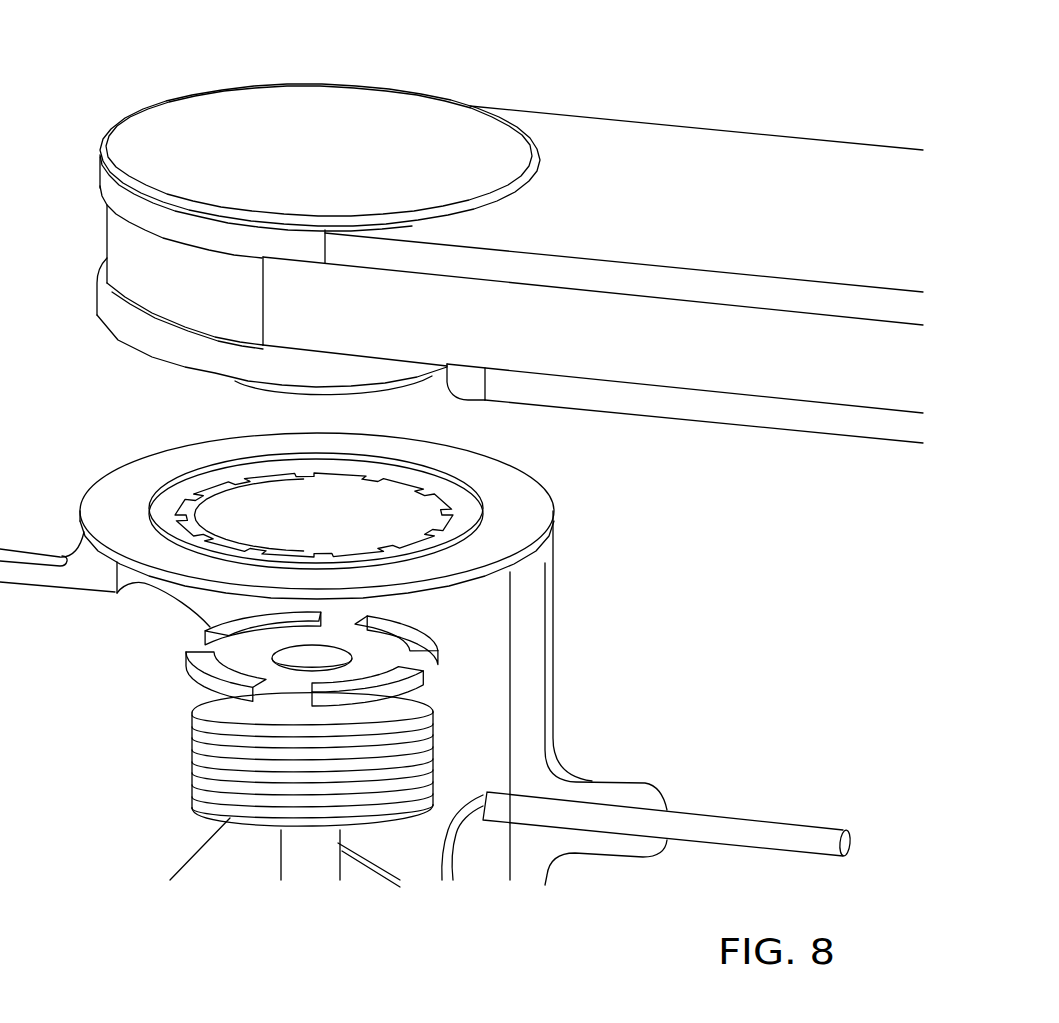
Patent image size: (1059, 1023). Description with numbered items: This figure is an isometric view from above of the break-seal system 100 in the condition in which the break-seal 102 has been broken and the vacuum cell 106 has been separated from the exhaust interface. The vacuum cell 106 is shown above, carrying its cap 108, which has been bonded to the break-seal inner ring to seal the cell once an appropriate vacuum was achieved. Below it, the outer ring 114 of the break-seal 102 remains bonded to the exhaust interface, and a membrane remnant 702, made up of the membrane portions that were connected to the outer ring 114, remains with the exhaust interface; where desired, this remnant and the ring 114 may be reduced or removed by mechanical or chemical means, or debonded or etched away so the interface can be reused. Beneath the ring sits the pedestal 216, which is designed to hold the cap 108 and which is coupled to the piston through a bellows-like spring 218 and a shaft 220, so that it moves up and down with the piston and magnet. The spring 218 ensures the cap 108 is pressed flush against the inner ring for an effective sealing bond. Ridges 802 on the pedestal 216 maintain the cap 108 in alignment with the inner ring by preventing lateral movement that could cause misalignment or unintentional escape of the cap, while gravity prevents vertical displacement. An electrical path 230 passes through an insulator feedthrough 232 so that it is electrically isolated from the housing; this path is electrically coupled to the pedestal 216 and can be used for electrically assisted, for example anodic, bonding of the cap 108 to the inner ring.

The break-seal system 100 is at (510, 240).
The break-seal 102 is at (360, 181).
The vacuum cell 106 is at (663, 239).
The cap 108 is at (328, 393).
The outer ring 114 is at (533, 519).
The membrane remnant 702 is at (200, 538).
The pedestal 216 is at (313, 647).
The ridges 802 is at (412, 629).
The bellows-like spring 218 is at (192, 774).
The shaft 220 is at (332, 877).
The electrical path 230 is at (443, 817).
The insulator feedthrough 232 is at (575, 817).